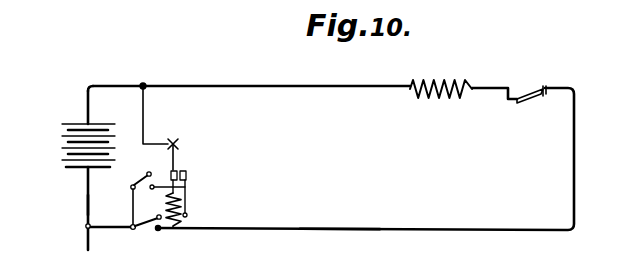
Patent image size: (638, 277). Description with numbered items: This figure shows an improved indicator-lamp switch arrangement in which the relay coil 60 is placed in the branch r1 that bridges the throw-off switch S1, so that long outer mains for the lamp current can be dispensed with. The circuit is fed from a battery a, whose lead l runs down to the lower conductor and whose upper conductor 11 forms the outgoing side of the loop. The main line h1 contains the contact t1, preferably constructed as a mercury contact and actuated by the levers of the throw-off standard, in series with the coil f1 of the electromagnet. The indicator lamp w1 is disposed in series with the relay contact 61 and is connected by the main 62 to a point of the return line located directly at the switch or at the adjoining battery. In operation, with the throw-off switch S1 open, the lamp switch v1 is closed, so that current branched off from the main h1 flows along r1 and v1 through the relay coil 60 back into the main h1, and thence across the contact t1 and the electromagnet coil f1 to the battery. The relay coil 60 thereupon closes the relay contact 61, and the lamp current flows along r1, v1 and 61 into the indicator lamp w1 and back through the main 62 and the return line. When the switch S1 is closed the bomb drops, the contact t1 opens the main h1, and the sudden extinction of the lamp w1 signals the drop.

The circuit conductor 11 is at (172, 85).
The battery a is at (62, 142).
The lead wire l is at (86, 198).
The main 62 is at (147, 113).
The indicator lamp w1 is at (182, 154).
The relay contact 61 is at (186, 189).
The lamp switch v1 is at (167, 182).
The branch r1 is at (135, 198).
The throw-off switch S1 is at (146, 232).
The relay coil 60 is at (174, 226).
The main line h1 is at (340, 221).
The coil of the electromagnet f1 is at (418, 80).
The contact t1 is at (533, 100).